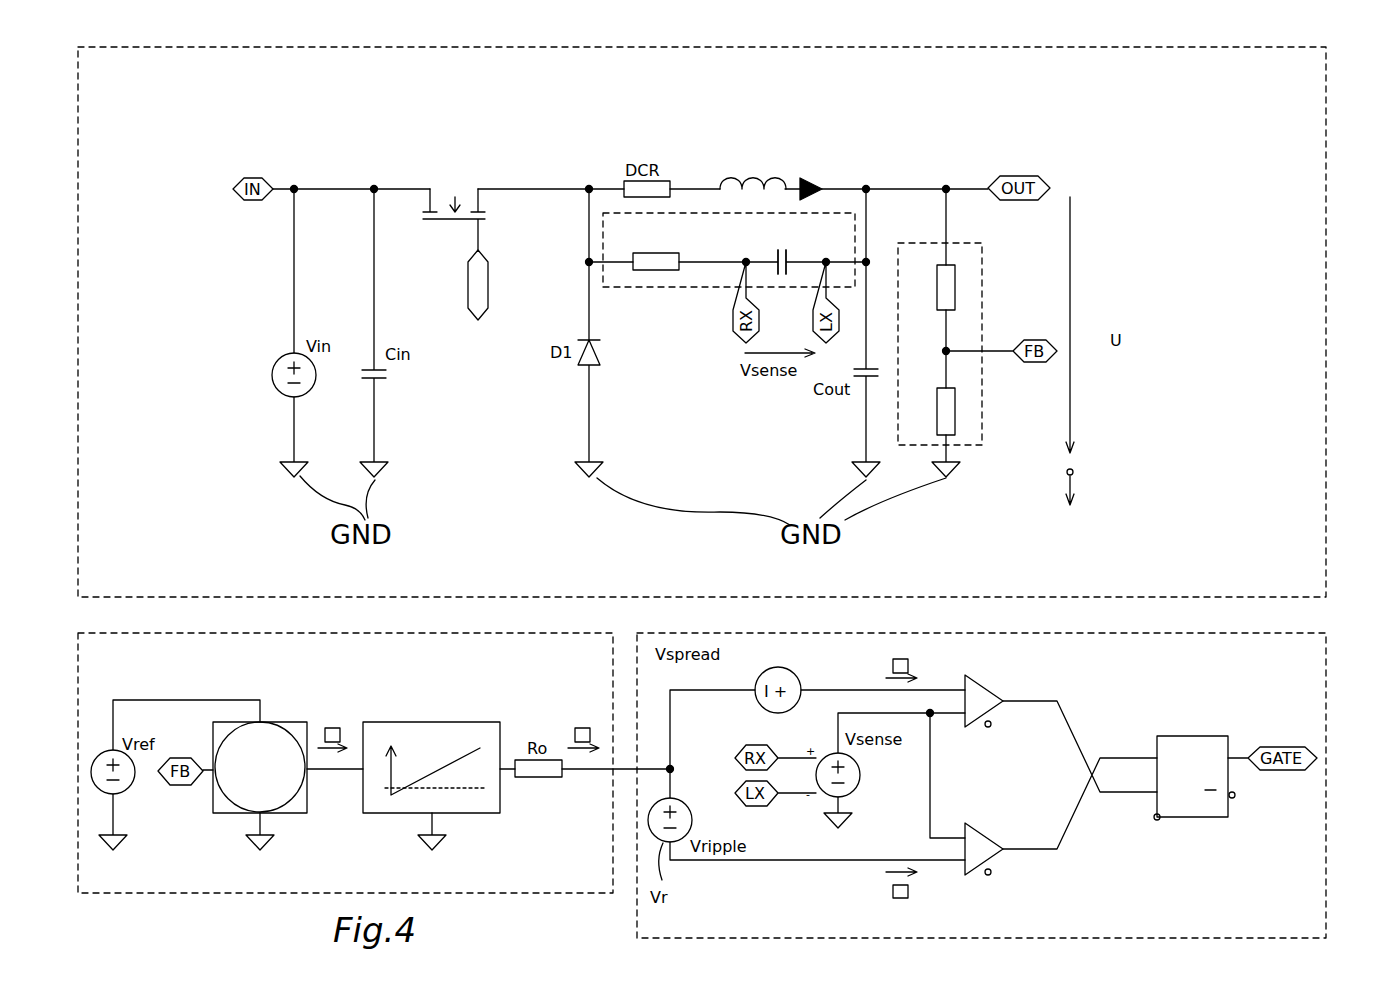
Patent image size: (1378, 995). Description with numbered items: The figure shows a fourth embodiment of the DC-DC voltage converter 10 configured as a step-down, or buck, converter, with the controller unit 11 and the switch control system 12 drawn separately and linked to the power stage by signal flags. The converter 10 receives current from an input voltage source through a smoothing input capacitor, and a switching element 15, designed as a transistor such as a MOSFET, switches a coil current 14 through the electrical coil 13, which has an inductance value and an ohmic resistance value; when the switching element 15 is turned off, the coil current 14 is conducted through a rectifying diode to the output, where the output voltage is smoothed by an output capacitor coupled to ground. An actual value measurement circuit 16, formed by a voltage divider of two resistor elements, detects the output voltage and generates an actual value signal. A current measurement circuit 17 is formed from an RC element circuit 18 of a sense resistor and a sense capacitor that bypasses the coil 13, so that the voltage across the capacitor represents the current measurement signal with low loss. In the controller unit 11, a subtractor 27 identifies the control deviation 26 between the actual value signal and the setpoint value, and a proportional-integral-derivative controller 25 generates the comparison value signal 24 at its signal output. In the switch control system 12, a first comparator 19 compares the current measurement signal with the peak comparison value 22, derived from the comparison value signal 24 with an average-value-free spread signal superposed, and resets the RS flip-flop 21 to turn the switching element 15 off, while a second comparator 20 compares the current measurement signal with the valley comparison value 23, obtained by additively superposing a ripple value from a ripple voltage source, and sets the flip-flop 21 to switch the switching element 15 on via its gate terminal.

The DC-DC voltage converter 10 is at (1258, 597).
The controller unit 11 is at (455, 893).
The switch control system 12 is at (637, 908).
The electrical coil 13 is at (727, 185).
The coil current 14 is at (814, 180).
The switching element 15 is at (484, 200).
The actual value measurement circuit 16 is at (984, 272).
The current measurement circuit 17 is at (668, 288).
The RC element circuit 18 is at (648, 285).
The comparator 19 is at (1000, 692).
The comparator 20 is at (1000, 840).
The RS flip-flop 21 is at (1190, 736).
The peak comparison value 22 is at (893, 664).
The valley comparison value 23 is at (893, 892).
The comparison value signal 24 is at (583, 728).
The PID controller 25 is at (437, 722).
The control deviation 26 is at (333, 728).
The subtractor 27 is at (260, 722).